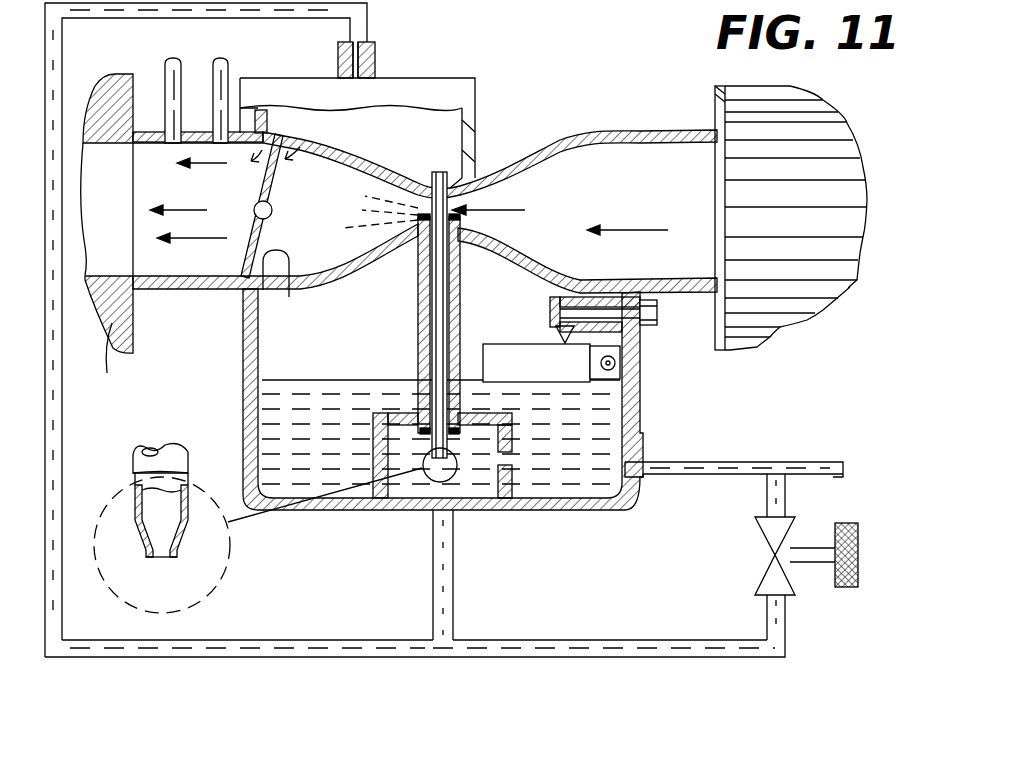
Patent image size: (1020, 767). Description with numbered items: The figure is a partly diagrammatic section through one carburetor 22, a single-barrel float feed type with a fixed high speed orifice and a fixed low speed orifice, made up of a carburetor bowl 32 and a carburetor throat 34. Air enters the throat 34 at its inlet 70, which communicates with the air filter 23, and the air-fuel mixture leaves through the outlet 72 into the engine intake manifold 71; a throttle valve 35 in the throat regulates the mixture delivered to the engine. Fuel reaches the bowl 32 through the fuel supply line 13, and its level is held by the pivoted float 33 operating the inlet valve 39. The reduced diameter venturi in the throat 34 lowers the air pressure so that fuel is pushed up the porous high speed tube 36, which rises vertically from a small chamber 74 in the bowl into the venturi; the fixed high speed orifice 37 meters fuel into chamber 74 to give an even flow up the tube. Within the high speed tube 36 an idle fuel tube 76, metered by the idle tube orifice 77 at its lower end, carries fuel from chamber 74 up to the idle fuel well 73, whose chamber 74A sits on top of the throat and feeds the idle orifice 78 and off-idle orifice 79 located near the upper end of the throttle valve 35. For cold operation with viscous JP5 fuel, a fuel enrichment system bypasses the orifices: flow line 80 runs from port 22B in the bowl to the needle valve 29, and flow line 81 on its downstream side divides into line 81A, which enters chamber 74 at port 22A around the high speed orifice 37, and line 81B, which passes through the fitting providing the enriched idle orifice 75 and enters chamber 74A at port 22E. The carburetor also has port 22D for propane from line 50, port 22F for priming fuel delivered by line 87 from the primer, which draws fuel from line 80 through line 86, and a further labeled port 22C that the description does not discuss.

The fuel supply line 13 is at (658, 318).
The carburetor 22 is at (652, 22).
The port 22A is at (438, 500).
The port 22B is at (646, 476).
The tank wall passage 22C is at (640, 318).
The port 22D is at (152, 130).
The port 22E is at (378, 66).
The port 22F is at (198, 209).
The air filter 23 is at (848, 131).
The needle valve 29 is at (797, 578).
The carburetor bowl 32 is at (243, 415).
The pivoted float 33 is at (542, 357).
The carburetor throat 34 is at (248, 305).
The throttle valve 35 is at (293, 293).
The high speed tube 36 is at (418, 286).
The high speed orifice 37 is at (512, 457).
The inlet valve 39 is at (552, 335).
The propane line 50 is at (182, 82).
The inlet 70 is at (715, 190).
The engine intake manifold 71 is at (105, 368).
The outlet 72 is at (133, 292).
The idle fuel well 73 is at (477, 112).
The small chamber 74 is at (482, 487).
The chamber 74A is at (440, 153).
The enriched idle orifice 75 is at (377, 42).
The idle fuel tube 76 is at (440, 323).
The idle tube orifice 77 is at (160, 558).
The idle orifice 78 is at (318, 158).
The off-idle orifice 79 is at (267, 136).
The flow line 80 is at (748, 480).
The flow line 81 is at (613, 648).
The line 81A is at (447, 593).
The line 81B is at (243, 640).
The line 86 is at (838, 462).
The line 87 is at (221, 80).